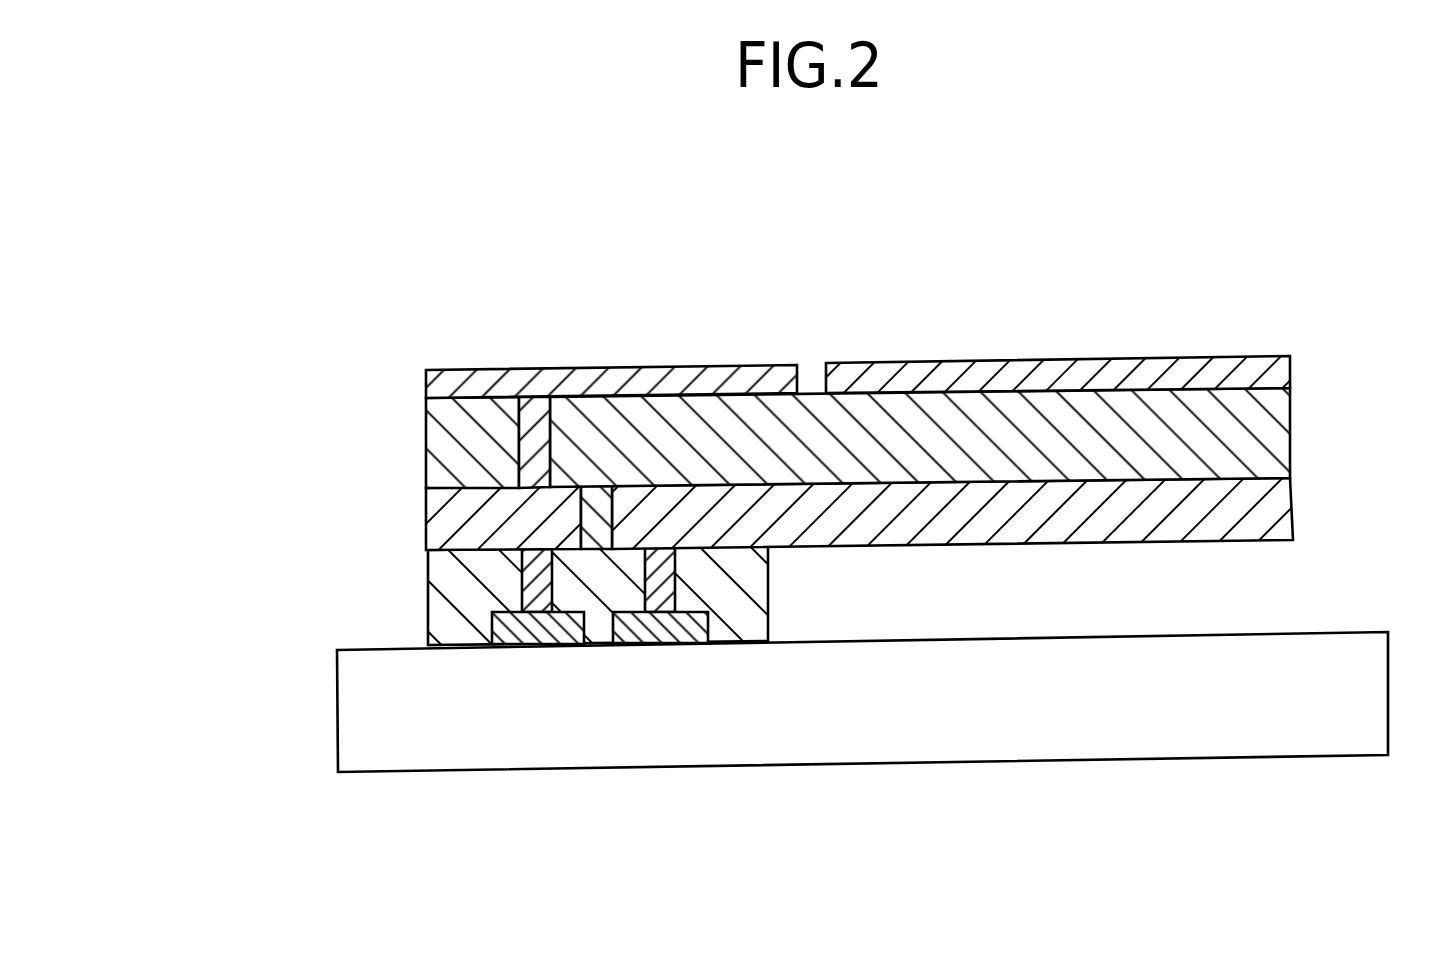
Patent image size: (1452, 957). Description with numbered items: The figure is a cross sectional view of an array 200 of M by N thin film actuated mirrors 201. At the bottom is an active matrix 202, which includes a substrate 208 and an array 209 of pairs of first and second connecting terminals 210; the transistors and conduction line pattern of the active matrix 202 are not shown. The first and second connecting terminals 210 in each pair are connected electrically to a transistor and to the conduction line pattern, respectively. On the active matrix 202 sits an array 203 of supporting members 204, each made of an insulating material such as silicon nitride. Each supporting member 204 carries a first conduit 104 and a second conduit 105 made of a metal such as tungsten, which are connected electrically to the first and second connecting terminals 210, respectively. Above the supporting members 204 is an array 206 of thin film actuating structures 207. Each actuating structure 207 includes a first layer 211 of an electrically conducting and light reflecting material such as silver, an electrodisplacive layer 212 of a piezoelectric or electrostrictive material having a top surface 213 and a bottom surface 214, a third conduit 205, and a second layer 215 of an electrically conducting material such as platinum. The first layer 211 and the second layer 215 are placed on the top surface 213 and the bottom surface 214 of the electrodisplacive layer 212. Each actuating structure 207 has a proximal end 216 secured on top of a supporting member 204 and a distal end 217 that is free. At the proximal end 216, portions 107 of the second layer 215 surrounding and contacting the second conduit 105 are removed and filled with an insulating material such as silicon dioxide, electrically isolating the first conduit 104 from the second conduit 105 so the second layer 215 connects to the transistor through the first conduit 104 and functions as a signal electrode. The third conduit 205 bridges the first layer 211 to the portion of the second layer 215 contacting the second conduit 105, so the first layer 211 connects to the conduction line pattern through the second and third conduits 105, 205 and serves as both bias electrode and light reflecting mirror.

The array of thin film actuated mirrors 200 is at (1206, 119).
The thin film actuated mirror 201 is at (1287, 203).
The active matrix 202 is at (243, 653).
The array of supporting members 203 is at (243, 560).
The supporting member 204 is at (768, 617).
The third conduit 205 is at (530, 440).
The array of thin film actuating structures 206 is at (241, 373).
The thin film actuating structure 207 is at (1240, 448).
The substrate 208 is at (1047, 733).
The array of pairs of connecting terminals 209 is at (332, 620).
The first and second connecting terminals 210 is at (537, 630).
The first layer 211 is at (543, 383).
The electrodisplacive layer 212 is at (1167, 438).
The top surface 213 is at (1040, 385).
The bottom surface 214 is at (1050, 483).
The second layer 215 is at (1250, 513).
The proximal end 216 is at (790, 298).
The distal end 217 is at (1287, 290).
The first conduit 104 is at (665, 578).
The second conduit 105 is at (532, 590).
The portions of the second layer 107 is at (605, 515).